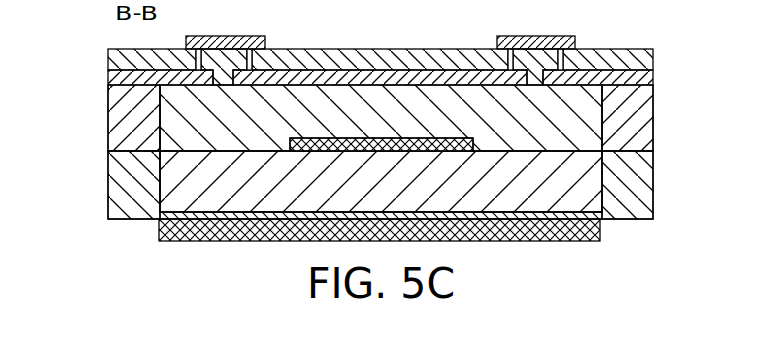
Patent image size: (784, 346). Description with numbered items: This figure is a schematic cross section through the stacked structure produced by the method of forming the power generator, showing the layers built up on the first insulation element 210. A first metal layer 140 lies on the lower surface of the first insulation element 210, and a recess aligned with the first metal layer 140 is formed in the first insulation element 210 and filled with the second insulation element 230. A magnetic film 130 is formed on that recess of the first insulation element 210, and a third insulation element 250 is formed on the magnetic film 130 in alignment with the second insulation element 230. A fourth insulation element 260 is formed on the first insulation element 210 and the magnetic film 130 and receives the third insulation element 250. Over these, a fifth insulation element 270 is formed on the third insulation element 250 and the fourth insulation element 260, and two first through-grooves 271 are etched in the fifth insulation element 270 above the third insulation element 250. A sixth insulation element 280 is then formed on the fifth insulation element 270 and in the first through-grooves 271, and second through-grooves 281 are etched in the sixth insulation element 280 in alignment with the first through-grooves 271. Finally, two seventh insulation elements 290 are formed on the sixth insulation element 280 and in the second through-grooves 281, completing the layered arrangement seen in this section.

The magnetic film 130 is at (290, 148).
The first metal layer 140 is at (602, 230).
The first insulation element 210 is at (653, 175).
The second insulation element 230 is at (593, 195).
The third insulation element 250 is at (602, 123).
The fourth insulation element 260 is at (653, 100).
The fifth insulation element 270 is at (653, 73).
The first through-grooves 271 is at (218, 76).
The sixth insulation element 280 is at (653, 52).
The second through-grooves 281 is at (193, 63).
The seventh insulation elements 290 is at (578, 41).